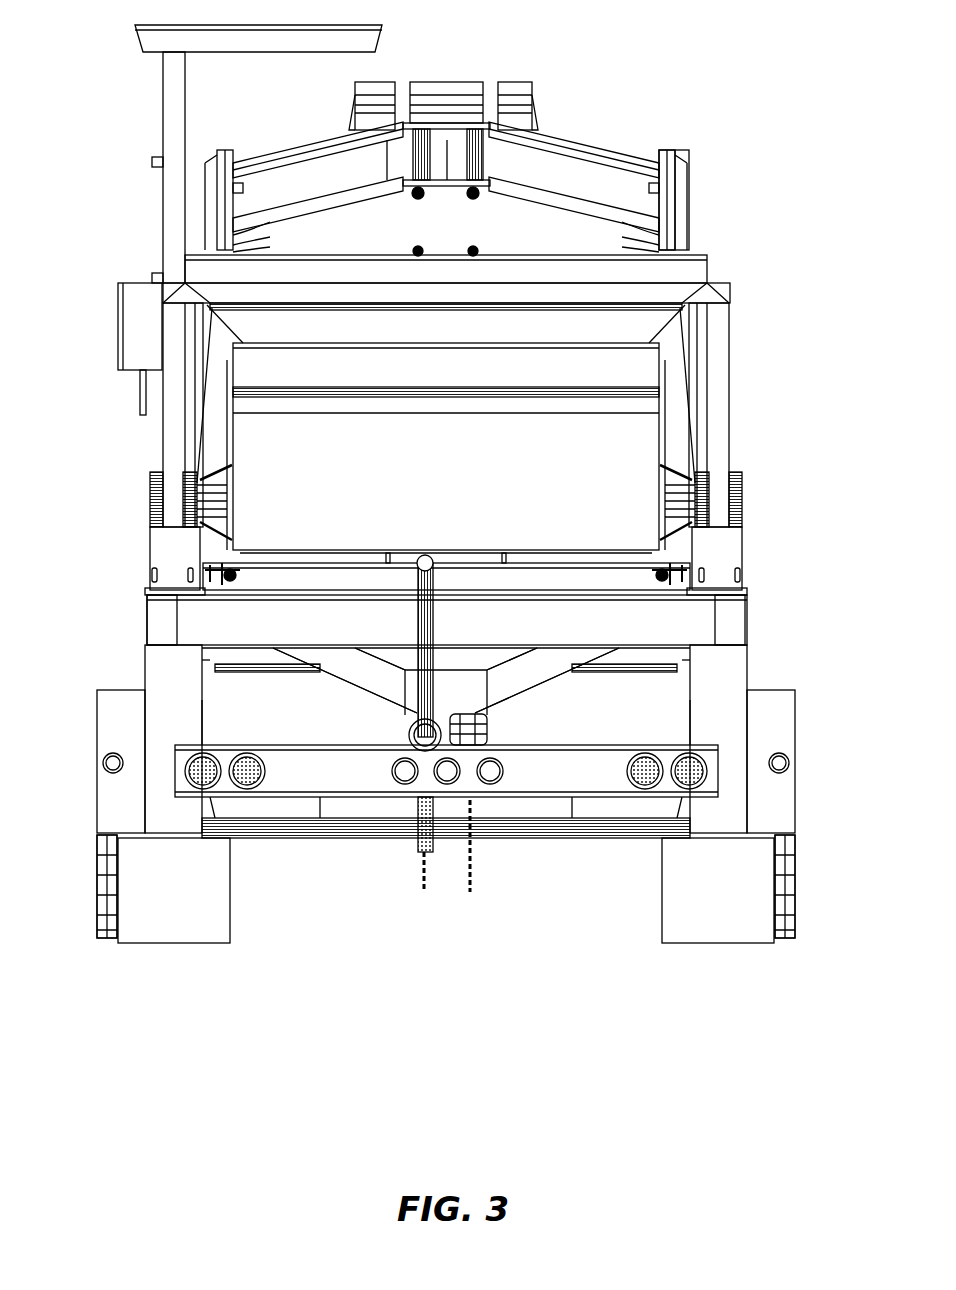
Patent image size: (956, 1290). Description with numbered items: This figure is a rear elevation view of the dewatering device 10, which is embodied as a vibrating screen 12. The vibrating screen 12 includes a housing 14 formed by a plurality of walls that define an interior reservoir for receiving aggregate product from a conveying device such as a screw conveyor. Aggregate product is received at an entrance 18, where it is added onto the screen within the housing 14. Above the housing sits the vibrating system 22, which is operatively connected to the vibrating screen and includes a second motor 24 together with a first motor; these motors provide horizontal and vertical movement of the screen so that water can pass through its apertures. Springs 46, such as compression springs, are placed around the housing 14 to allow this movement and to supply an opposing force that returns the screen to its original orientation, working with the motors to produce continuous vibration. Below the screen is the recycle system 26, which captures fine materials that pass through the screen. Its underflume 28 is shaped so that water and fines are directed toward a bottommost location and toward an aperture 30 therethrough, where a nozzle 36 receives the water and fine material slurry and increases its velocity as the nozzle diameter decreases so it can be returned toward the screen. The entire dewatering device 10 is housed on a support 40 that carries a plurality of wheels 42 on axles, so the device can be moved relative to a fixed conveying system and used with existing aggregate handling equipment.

The dewatering device 10 is at (648, 62).
The vibrating screen 12 is at (694, 168).
The housing 14 is at (688, 203).
The entrance 18 is at (675, 265).
The vibrating system 22 is at (457, 78).
The second motor 24 is at (520, 80).
The recycle system 26 is at (343, 687).
The underflume 28 is at (545, 670).
The aperture 30 is at (487, 718).
The nozzle 36 is at (415, 688).
The support 40 is at (533, 843).
The wheels 42 is at (97, 877).
The springs 46 is at (745, 482).